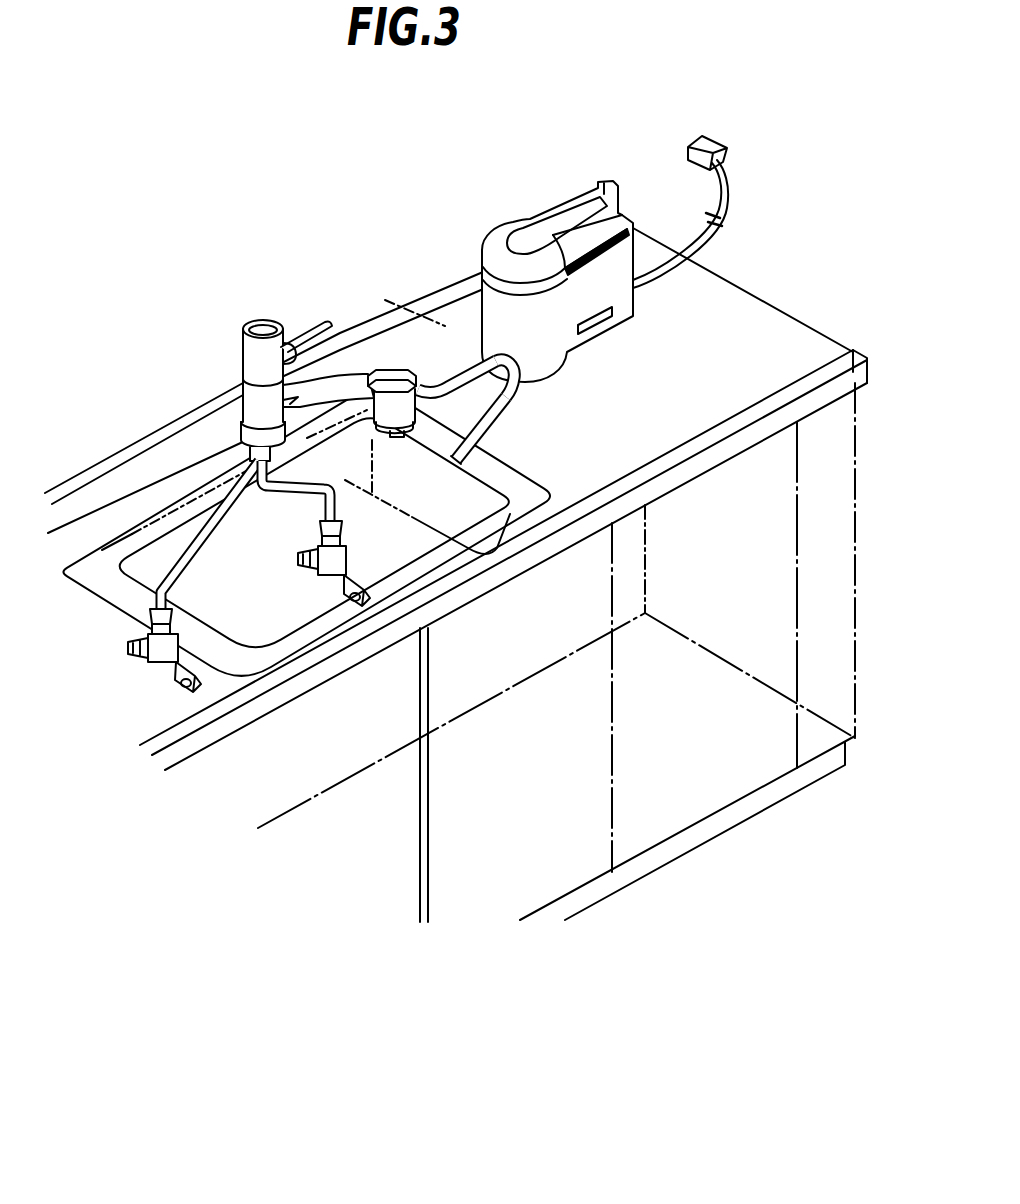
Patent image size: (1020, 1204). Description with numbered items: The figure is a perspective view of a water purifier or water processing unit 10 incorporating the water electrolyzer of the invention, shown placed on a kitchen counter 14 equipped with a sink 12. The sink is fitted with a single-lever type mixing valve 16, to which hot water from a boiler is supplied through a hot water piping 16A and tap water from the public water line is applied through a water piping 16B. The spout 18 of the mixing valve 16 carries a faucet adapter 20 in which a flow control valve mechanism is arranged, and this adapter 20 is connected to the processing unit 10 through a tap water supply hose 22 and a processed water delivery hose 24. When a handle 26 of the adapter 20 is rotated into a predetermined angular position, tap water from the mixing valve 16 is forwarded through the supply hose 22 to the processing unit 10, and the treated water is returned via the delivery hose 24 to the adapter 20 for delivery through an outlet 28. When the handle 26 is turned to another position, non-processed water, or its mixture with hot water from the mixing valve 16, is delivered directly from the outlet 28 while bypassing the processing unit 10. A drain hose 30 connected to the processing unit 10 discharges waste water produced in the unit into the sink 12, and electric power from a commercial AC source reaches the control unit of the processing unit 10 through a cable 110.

The water processing unit 10 is at (543, 188).
The cable 110 is at (708, 182).
The sink 12 is at (110, 621).
The kitchen counter 14 is at (798, 327).
The mixing valve 16 is at (226, 356).
The hot water piping 16A is at (187, 550).
The water piping 16B is at (303, 486).
The spout 18 is at (350, 372).
The faucet adapter 20 is at (414, 350).
The tap water supply hose 22 is at (475, 381).
The processed water delivery hose 24 is at (516, 390).
The handle 26 is at (395, 347).
The outlet 28 is at (400, 437).
The drain hose 30 is at (500, 424).